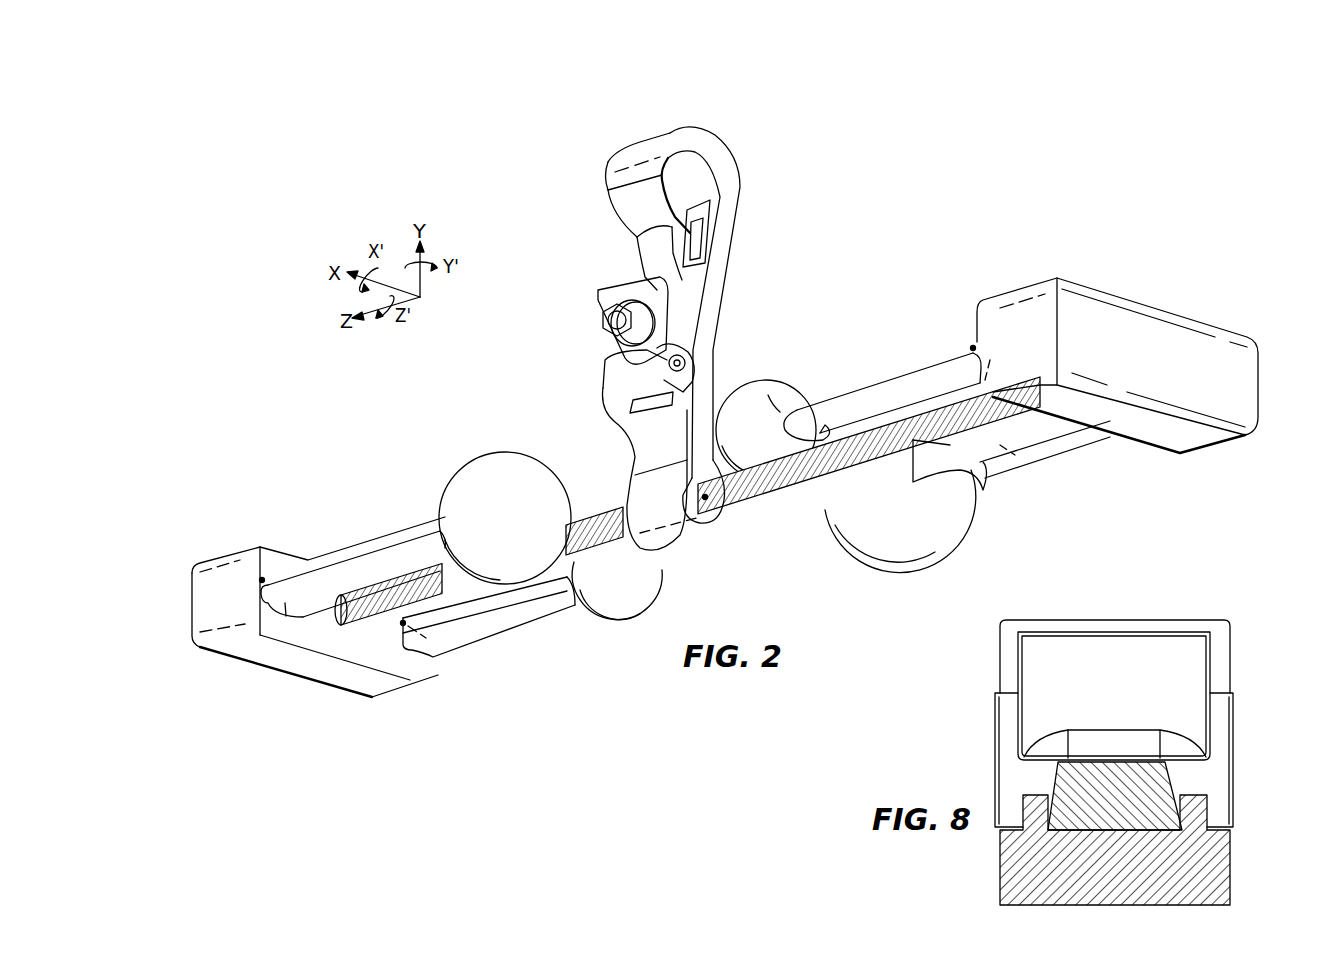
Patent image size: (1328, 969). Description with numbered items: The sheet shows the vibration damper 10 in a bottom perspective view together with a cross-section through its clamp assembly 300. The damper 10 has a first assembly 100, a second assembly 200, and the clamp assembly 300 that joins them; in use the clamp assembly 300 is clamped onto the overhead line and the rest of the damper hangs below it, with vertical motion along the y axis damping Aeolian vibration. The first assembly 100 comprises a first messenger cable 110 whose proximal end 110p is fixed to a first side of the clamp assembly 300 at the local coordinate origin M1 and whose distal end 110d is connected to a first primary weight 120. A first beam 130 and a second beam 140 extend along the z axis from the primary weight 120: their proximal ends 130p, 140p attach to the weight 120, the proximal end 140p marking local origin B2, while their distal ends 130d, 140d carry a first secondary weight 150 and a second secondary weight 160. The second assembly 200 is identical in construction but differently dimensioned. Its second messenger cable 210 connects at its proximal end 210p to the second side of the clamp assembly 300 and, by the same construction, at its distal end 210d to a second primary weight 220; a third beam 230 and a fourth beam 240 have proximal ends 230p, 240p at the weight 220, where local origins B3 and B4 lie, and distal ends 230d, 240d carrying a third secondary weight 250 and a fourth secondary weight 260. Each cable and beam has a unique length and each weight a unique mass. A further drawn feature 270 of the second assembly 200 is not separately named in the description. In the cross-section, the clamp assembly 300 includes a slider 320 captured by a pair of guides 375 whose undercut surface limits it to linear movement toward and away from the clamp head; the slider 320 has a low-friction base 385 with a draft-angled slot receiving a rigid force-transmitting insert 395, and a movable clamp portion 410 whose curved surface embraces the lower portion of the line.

In FIG. 2, the vibration damper 10 is at (421, 408).
In FIG. 2, the first assembly 100 is at (1138, 278).
In FIG. 2, the first messenger cable 110 is at (845, 482).
In FIG. 2, the distal end of first messenger cable 110d is at (1010, 457).
In FIG. 2, the proximal end of first messenger cable 110p is at (732, 472).
In FIG. 2, the first primary weight 120 is at (1038, 282).
In FIG. 2, the first beam 130 is at (1043, 448).
In FIG. 2, the distal end of first beam 130d is at (965, 470).
In FIG. 2, the proximal end of first beam 130p is at (1110, 437).
In FIG. 2, the second beam 140 is at (880, 377).
In FIG. 2, the distal end of second beam 140d is at (793, 393).
In FIG. 2, the proximal end of second beam 140p is at (958, 352).
In FIG. 2, the first secondary weight 150 is at (875, 537).
In FIG. 2, the second secondary weight 160 is at (750, 380).
In FIG. 2, the second assembly 200 is at (273, 502).
In FIG. 2, the second messenger cable 210 is at (455, 598).
In FIG. 2, the cable clamp body 210d is at (600, 508).
In FIG. 2, the proximal end of second messenger cable 210p is at (357, 630).
In FIG. 2, the second primary weight 220 is at (252, 665).
In FIG. 2, the third beam 230 is at (362, 547).
In FIG. 2, the upper flange notch 230d is at (428, 518).
In FIG. 2, the upper flange proximal end 230p is at (288, 625).
In FIG. 2, the fourth beam 240 is at (495, 605).
In FIG. 2, the lower flange notch 240d is at (560, 595).
In FIG. 2, the lower flange proximal end 240p is at (418, 647).
In FIG. 2, the third secondary weight 250 is at (503, 470).
In FIG. 2, the fourth secondary weight 260 is at (625, 600).
In FIG. 2, the channel floor 270 is at (350, 628).
In FIG. 2, the clamp assembly 300 is at (758, 165).
In FIG. 8, the slider 320 is at (1238, 855).
In FIG. 8, the guides 375 is at (998, 720).
In FIG. 8, the low friction base 385 is at (1210, 870).
In FIG. 8, the force-transmitting insert 395 is at (1150, 800).
In FIG. 8, the movable clamp portion 410 is at (1180, 660).
In FIG. 2, the local coordinate origin B2 is at (975, 347).
In FIG. 2, the local coordinate origin B3 is at (258, 578).
In FIG. 2, the local coordinate origin B4 is at (402, 626).
In FIG. 2, the local coordinate origin M1 is at (705, 499).